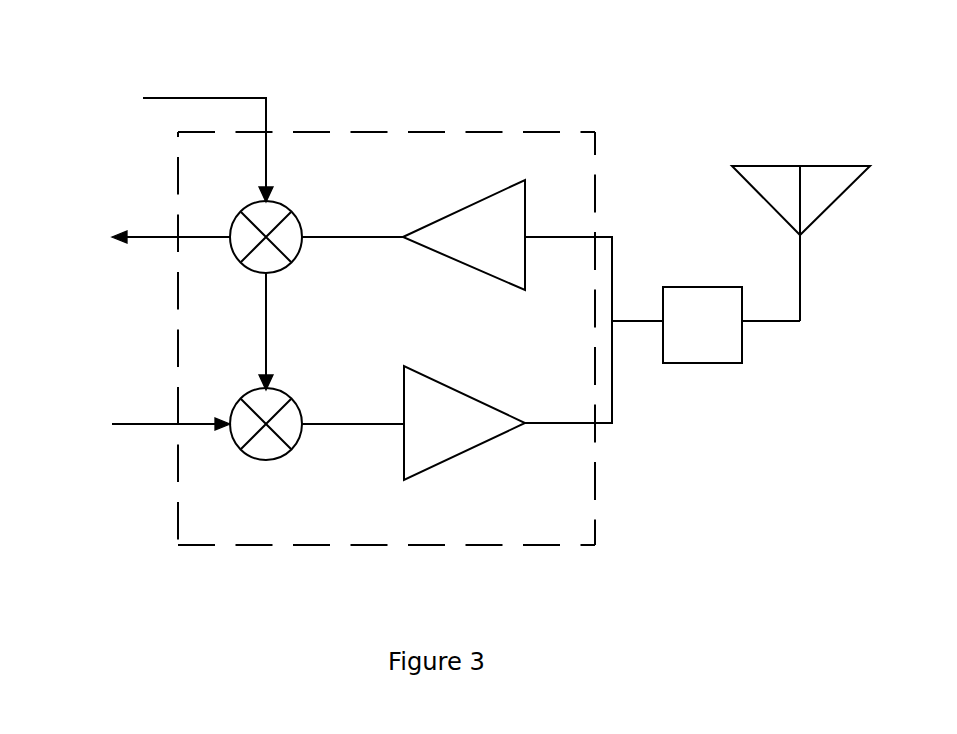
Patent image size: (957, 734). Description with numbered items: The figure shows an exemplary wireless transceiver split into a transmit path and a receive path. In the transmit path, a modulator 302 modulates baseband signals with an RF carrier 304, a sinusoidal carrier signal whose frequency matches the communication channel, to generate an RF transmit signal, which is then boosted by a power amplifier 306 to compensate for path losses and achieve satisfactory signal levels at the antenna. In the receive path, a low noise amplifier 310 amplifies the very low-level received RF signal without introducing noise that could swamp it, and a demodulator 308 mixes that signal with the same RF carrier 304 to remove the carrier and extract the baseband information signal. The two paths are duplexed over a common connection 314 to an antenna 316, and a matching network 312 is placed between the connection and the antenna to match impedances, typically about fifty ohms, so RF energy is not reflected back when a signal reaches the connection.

The modulator 302 is at (287, 403).
The RF carrier 304 is at (156, 137).
The power amplifier (PA) 306 is at (440, 382).
The demodulator 308 is at (288, 210).
The low noise amplifier (LNA) 310 is at (472, 205).
The matching network 312 is at (702, 280).
The antenna node connection 314 is at (613, 317).
The antenna 316 is at (772, 165).